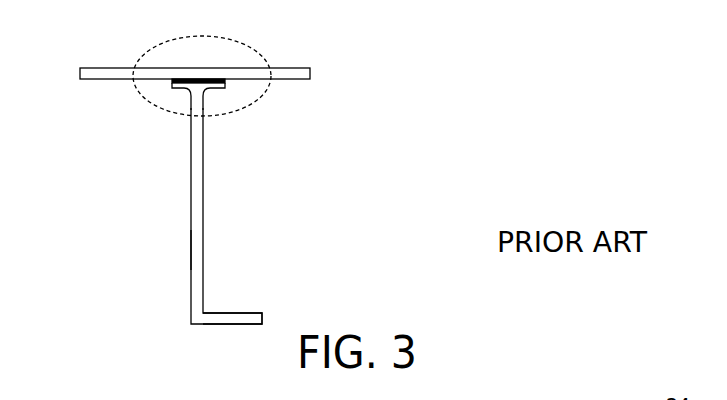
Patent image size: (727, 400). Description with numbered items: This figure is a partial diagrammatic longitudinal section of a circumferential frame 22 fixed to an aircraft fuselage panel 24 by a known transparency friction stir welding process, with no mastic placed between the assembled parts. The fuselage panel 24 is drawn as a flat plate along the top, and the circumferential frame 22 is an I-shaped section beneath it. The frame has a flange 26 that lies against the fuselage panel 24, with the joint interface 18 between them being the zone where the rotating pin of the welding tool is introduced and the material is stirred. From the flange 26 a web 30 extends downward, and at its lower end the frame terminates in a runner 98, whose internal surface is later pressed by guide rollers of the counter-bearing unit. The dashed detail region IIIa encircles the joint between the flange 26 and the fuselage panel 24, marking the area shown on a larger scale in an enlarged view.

The detail region IIIa is at (165, 43).
The aircraft fuselage panel 24 is at (293, 65).
The joint interface 18 is at (243, 103).
The flange 26 is at (177, 89).
The circumferential frame 22 is at (208, 227).
The web 30 is at (197, 248).
The runner 98 is at (230, 314).